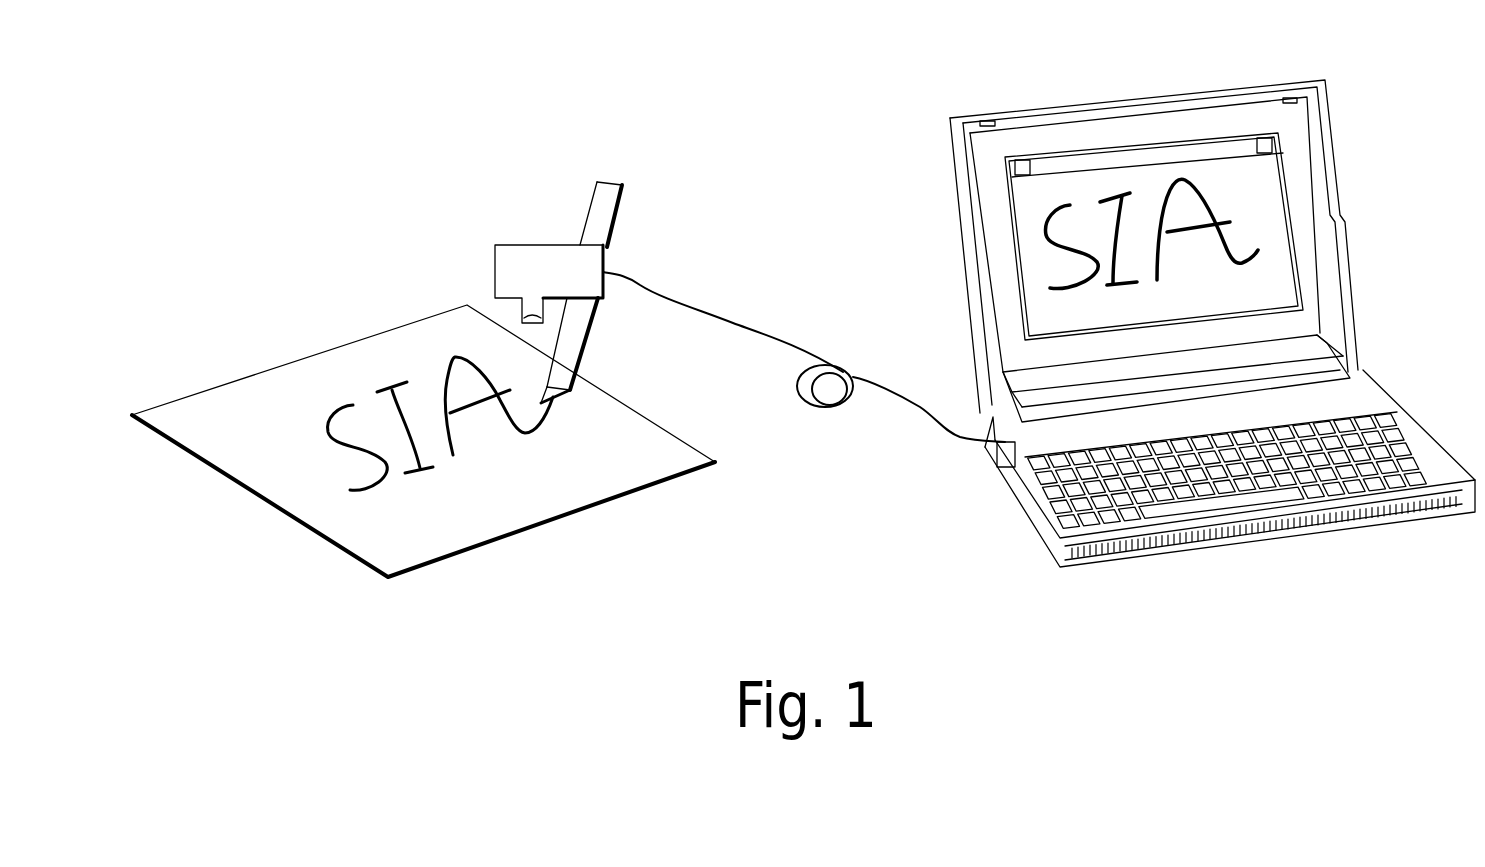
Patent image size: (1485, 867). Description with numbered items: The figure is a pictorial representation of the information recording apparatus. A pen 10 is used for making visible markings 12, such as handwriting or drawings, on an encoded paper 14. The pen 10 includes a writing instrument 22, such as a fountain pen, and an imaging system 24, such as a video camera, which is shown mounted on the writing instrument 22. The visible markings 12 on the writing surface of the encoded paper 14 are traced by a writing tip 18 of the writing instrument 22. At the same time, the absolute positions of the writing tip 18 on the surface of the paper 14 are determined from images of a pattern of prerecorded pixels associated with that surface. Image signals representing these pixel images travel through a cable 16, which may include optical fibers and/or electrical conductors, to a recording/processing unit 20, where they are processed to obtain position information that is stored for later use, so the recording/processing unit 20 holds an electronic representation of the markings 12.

The pen 10 is at (559, 280).
The visible markings 12 is at (428, 470).
The encoded paper 14 is at (243, 377).
The cable 16 is at (770, 337).
The writing tip 18 is at (559, 404).
The recording/processing unit 20 is at (1020, 100).
The writing instrument 22 is at (622, 207).
The imaging system 24 is at (495, 263).